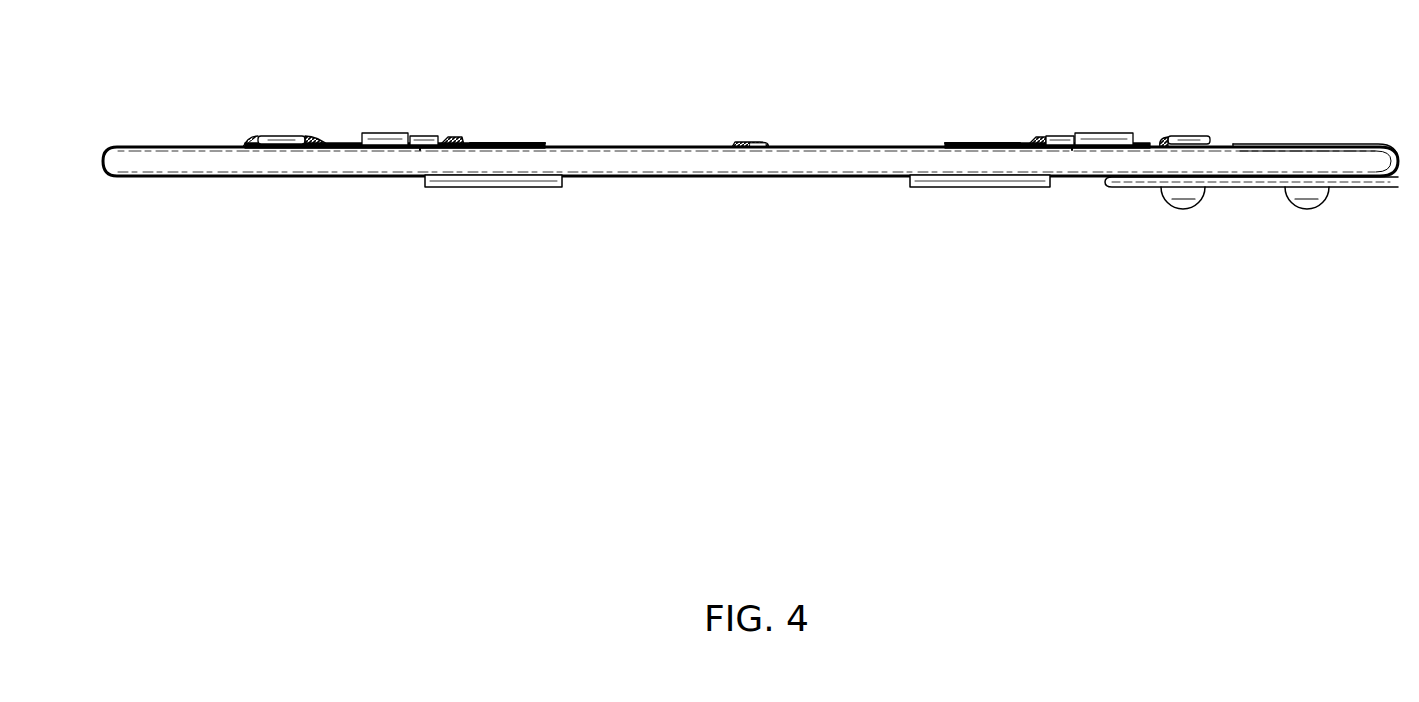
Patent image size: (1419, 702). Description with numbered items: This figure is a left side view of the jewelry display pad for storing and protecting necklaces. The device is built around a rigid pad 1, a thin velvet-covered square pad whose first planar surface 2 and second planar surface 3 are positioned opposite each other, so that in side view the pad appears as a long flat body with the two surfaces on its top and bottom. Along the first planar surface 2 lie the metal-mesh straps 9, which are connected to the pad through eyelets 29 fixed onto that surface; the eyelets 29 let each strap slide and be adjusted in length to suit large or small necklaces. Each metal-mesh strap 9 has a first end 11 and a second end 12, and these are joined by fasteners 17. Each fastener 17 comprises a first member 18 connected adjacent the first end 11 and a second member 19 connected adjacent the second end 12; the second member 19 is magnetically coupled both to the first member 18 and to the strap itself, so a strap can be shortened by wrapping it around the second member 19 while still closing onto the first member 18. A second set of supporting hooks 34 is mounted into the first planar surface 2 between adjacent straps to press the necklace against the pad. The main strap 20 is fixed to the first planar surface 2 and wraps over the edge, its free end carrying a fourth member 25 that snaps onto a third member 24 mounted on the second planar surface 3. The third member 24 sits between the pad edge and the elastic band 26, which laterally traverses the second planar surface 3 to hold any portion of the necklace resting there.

The rigid pad 1 is at (213, 135).
The first planar surface 2 is at (652, 146).
The second planar surface 3 is at (770, 178).
The metal-mesh straps 9 is at (532, 128).
The first end 11 is at (1040, 140).
The second end 12 is at (402, 146).
The fasteners 17 is at (405, 122).
The first member 18 is at (420, 137).
The second member 19 is at (422, 150).
The main strap 20 is at (1294, 145).
The third member 24 is at (1205, 178).
The fourth member 25 is at (1183, 200).
The elastic band 26 is at (565, 184).
The eyelets 29 is at (247, 142).
The second set of supporting hooks 34 is at (773, 137).